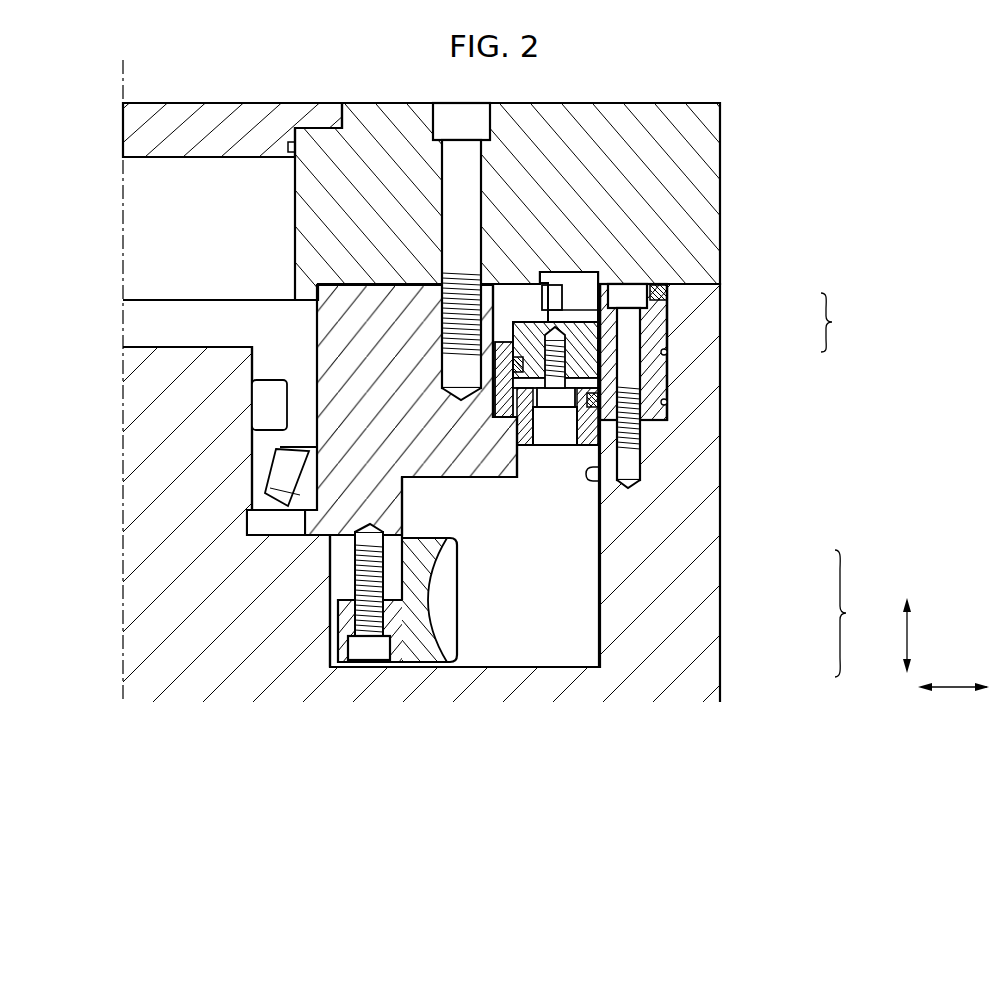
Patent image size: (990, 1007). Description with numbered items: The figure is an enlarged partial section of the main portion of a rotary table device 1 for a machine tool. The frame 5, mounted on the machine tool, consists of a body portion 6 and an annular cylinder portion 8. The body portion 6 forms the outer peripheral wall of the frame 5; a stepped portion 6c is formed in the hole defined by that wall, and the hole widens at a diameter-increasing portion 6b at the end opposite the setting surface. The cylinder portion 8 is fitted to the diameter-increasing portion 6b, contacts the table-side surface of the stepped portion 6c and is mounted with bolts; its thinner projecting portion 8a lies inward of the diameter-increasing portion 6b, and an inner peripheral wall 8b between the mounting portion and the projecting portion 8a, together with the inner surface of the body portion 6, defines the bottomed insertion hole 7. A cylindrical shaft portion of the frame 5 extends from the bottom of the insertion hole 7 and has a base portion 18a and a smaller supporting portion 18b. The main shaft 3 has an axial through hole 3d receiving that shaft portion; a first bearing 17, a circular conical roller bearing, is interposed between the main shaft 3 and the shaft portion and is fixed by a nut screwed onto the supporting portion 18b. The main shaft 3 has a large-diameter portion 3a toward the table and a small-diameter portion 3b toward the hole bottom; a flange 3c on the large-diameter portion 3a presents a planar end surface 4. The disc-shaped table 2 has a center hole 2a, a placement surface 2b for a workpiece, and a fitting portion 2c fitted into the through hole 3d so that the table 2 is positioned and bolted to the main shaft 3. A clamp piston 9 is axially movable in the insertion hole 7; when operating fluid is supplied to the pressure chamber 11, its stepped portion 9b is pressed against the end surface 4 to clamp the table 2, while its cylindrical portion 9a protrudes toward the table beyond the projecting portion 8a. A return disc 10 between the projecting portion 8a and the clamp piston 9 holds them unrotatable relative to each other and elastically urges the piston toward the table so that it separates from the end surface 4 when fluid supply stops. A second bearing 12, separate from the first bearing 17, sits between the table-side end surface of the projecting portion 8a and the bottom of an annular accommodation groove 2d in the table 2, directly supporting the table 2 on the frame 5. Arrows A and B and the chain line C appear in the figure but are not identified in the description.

The rotary table device 1 is at (674, 70).
The table 2 is at (720, 215).
The center hole 2a is at (295, 260).
The placement surface 2b is at (372, 103).
The fitting portion 2c is at (297, 302).
The accommodation groove 2d is at (542, 278).
The main shaft 3 is at (490, 493).
The large-diameter portion 3a is at (402, 510).
The small-diameter portion 3b is at (470, 500).
The flange 3c is at (448, 463).
The through hole 3d is at (405, 448).
The end surface 4 is at (522, 478).
The frame 5 is at (721, 352).
The body portion 6 is at (667, 363).
The diameter-increasing portion 6b is at (667, 296).
The stepped portion 6c is at (686, 416).
The insertion hole 7 is at (604, 476).
The cylinder portion 8 is at (650, 345).
The projecting portion 8a is at (522, 328).
The inner peripheral wall 8b is at (577, 440).
The clamp piston 9 is at (560, 448).
The cylindrical portion 9a is at (495, 310).
The stepped portion 9b is at (497, 450).
The return disc 10 is at (583, 373).
The pressure chamber 11 is at (573, 384).
The second bearing 12 is at (570, 290).
The first bearing 17 is at (277, 473).
The base portion 18a is at (167, 612).
The supporting portion 18b is at (147, 385).
The direction A is at (915, 635).
The direction B is at (953, 676).
The center axis C is at (123, 652).